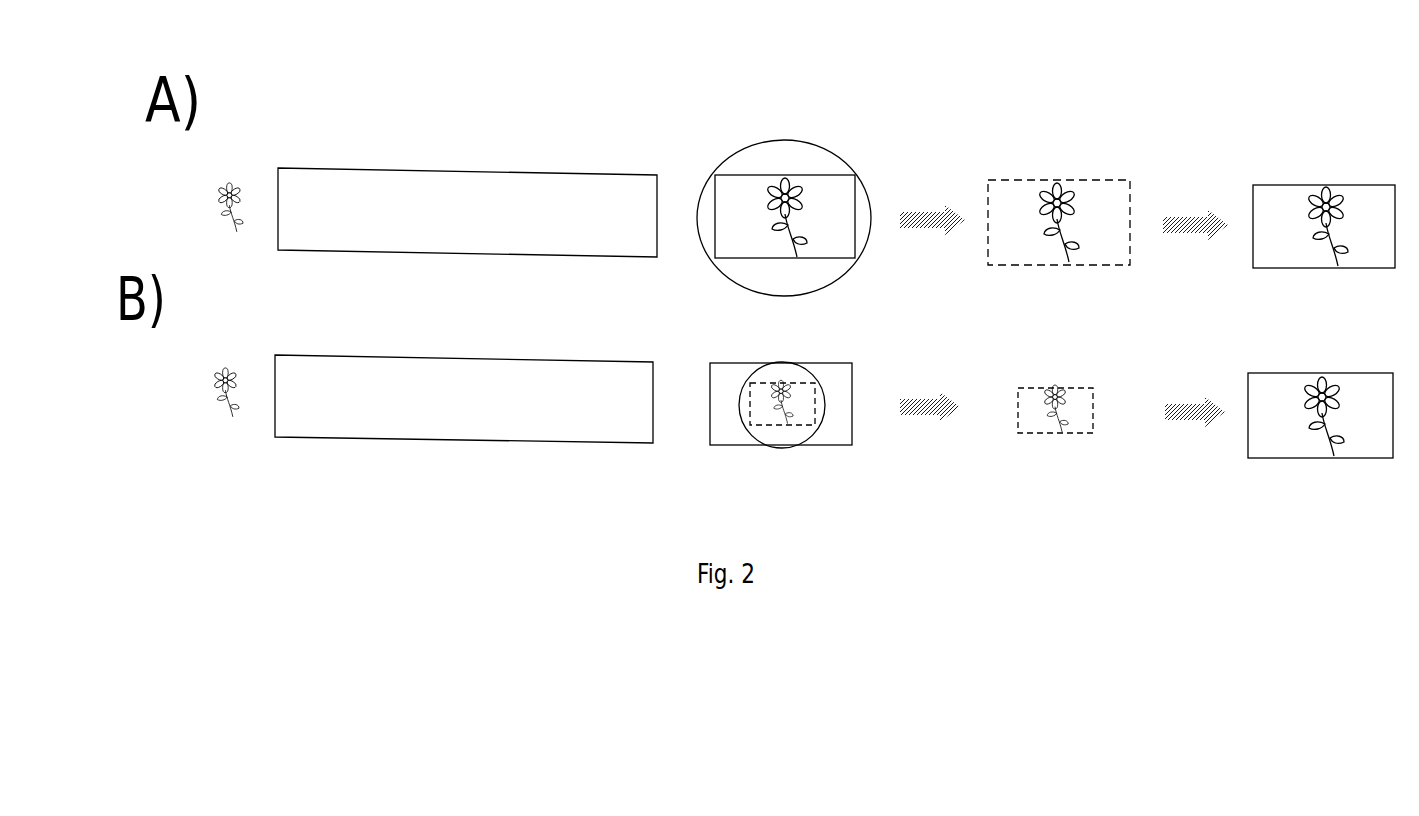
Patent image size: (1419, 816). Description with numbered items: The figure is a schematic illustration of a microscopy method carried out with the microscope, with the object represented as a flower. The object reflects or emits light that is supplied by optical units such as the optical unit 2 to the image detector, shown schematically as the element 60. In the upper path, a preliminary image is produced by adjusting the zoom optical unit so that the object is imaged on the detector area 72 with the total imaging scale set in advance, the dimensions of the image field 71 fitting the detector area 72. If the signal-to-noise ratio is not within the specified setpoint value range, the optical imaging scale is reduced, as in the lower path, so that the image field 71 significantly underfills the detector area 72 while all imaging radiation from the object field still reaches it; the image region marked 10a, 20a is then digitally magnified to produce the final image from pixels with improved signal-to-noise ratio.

The optical unit 2 is at (205, 200).
The bar / strip 60 is at (468, 168).
The image field 71 is at (738, 148).
The detector area 72 is at (831, 172).
The first marking 10a is at (878, 309).
The second marking 20a is at (766, 174).